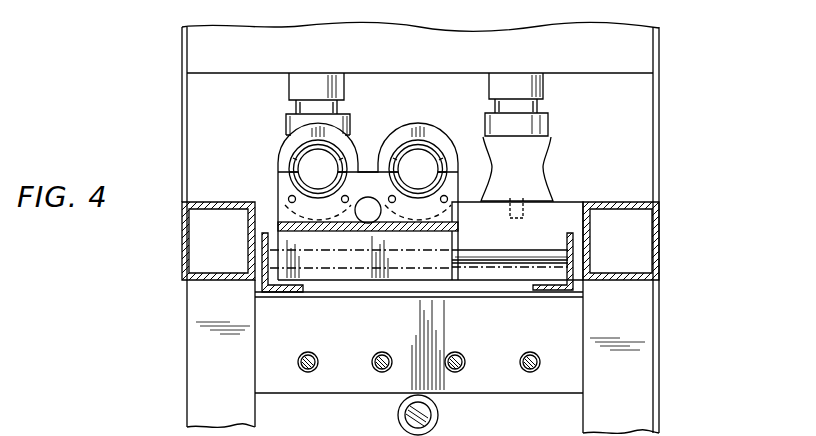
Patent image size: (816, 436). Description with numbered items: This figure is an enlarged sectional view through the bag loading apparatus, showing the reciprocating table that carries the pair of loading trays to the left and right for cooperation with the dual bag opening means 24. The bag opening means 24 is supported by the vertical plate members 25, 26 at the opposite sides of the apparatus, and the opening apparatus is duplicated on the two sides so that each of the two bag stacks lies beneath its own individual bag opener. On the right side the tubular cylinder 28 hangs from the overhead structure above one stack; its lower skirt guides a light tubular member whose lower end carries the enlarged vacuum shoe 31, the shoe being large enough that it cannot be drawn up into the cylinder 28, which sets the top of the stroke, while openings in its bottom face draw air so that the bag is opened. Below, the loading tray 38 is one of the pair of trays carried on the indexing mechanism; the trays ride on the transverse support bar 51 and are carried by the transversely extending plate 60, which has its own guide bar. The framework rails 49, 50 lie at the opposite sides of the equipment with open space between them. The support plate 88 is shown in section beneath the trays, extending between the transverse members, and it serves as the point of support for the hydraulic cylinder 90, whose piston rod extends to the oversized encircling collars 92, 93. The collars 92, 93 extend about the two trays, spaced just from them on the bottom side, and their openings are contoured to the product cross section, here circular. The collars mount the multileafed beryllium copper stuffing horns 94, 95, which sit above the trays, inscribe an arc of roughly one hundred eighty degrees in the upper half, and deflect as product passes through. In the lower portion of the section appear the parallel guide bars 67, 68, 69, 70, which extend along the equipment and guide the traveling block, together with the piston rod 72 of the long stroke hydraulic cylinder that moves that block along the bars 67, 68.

The bag opening means 24 is at (462, 58).
The vertical plate member 25 is at (190, 227).
The vertical plate member 26 is at (659, 133).
The tubular cylinder 28 is at (543, 78).
The vacuum shoe 31 is at (350, 121).
The loading tray 38 is at (318, 169).
The rail 49 is at (575, 245).
The rail 50 is at (262, 241).
The support bar 51 is at (517, 268).
The plate 60 is at (445, 243).
The guide bar 67 is at (457, 351).
The guide bar 68 is at (384, 351).
The guide bar 69 is at (540, 351).
The guide bar 70 is at (307, 351).
The piston rod 72 is at (432, 417).
The support plate 88 is at (280, 213).
The hydraulic cylinder 90 is at (362, 223).
The encircling collar 92 is at (283, 133).
The encircling collar 93 is at (418, 124).
The stuffing horn 94 is at (291, 150).
The stuffing horn 95 is at (440, 145).